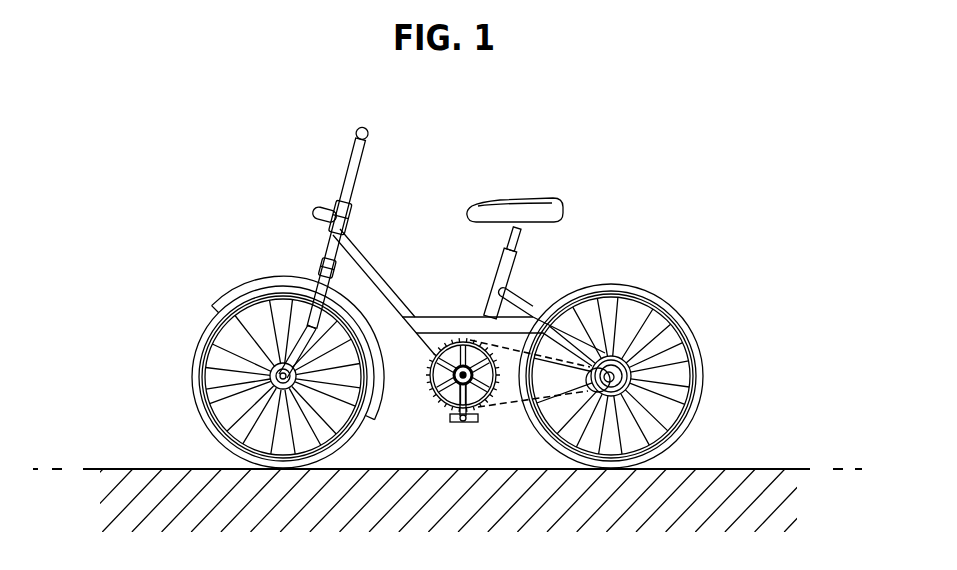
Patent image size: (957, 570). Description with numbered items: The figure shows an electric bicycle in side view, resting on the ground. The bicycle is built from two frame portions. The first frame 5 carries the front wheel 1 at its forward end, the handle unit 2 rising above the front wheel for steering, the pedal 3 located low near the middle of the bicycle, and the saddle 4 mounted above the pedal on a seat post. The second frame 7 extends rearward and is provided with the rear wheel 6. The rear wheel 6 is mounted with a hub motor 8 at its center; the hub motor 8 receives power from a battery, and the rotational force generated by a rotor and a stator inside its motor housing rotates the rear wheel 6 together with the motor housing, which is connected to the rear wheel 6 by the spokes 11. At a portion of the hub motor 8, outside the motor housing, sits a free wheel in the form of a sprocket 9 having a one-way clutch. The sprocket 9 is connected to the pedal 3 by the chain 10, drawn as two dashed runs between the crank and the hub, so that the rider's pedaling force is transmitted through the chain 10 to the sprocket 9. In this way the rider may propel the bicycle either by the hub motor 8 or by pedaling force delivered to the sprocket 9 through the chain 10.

The front wheel 1 is at (203, 337).
The handle unit 2 is at (347, 170).
The pedal 3 is at (442, 403).
The saddle 4 is at (516, 198).
The first frame 5 is at (388, 266).
The rear wheel 6 is at (658, 302).
The second frame 7 is at (512, 322).
The hub motor 8 is at (630, 357).
The sprocket 9 is at (632, 376).
The chain 10 is at (503, 408).
The spokes 11 is at (618, 311).